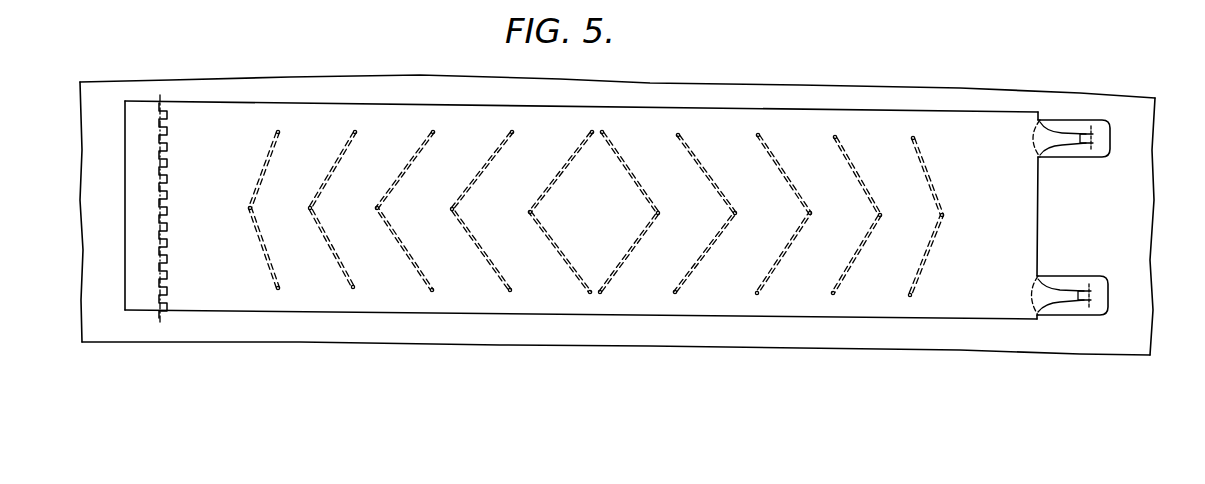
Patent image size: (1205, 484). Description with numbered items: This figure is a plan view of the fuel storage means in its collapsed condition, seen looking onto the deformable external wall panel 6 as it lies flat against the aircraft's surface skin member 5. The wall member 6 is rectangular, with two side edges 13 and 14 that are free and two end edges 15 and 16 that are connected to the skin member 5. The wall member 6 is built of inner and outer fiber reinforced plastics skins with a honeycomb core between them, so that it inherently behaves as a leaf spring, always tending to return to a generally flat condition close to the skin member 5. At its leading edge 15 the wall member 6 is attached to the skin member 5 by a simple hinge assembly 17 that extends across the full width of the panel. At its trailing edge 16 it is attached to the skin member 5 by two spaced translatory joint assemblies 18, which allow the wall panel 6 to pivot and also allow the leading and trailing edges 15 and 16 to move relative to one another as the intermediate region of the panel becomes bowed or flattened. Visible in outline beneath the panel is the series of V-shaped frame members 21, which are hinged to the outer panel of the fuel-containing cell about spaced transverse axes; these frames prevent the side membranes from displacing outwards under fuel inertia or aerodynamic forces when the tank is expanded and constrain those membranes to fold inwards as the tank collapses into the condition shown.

The surface skin member 5 is at (186, 341).
The deformable external wall panel 6 is at (581, 210).
The side edge 13 is at (380, 107).
The side edge 14 is at (362, 314).
The end edge 15 is at (175, 120).
The end edge 16 is at (1027, 180).
The hinge assembly 17 is at (160, 120).
The translatory joint assembly 18 is at (1053, 133).
The V-shaped frame member 21 is at (268, 150).